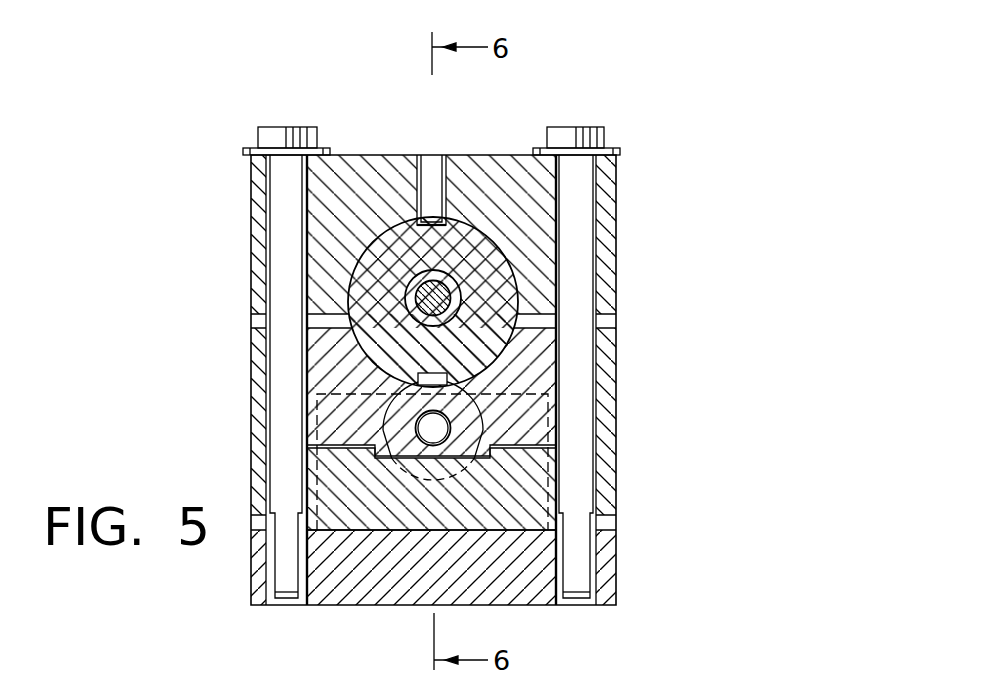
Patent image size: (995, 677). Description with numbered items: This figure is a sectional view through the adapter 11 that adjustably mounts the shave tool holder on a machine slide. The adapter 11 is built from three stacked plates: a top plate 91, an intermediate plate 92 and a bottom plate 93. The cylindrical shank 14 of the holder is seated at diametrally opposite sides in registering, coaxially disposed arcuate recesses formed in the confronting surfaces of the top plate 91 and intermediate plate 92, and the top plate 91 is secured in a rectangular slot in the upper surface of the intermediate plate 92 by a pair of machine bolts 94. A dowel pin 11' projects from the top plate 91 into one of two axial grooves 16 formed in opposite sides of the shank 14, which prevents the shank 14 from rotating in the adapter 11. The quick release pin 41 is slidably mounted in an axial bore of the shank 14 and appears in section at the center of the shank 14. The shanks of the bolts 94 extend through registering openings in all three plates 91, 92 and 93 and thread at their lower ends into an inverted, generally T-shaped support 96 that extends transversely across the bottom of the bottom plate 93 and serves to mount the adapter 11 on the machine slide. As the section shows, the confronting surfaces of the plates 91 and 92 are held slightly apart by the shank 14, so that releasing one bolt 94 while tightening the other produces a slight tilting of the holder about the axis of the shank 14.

The adapter 11 is at (433, 302).
The dowel pin 11' is at (399, 156).
The shank 14 is at (380, 292).
The axial grooves 16 is at (433, 228).
The quick release pin 41 is at (463, 324).
The top plate 91 is at (467, 157).
The intermediate plate 92 is at (253, 392).
The bottom plate 93 is at (263, 477).
The machine bolts 94 is at (297, 127).
The T-shaped support 96 is at (495, 590).